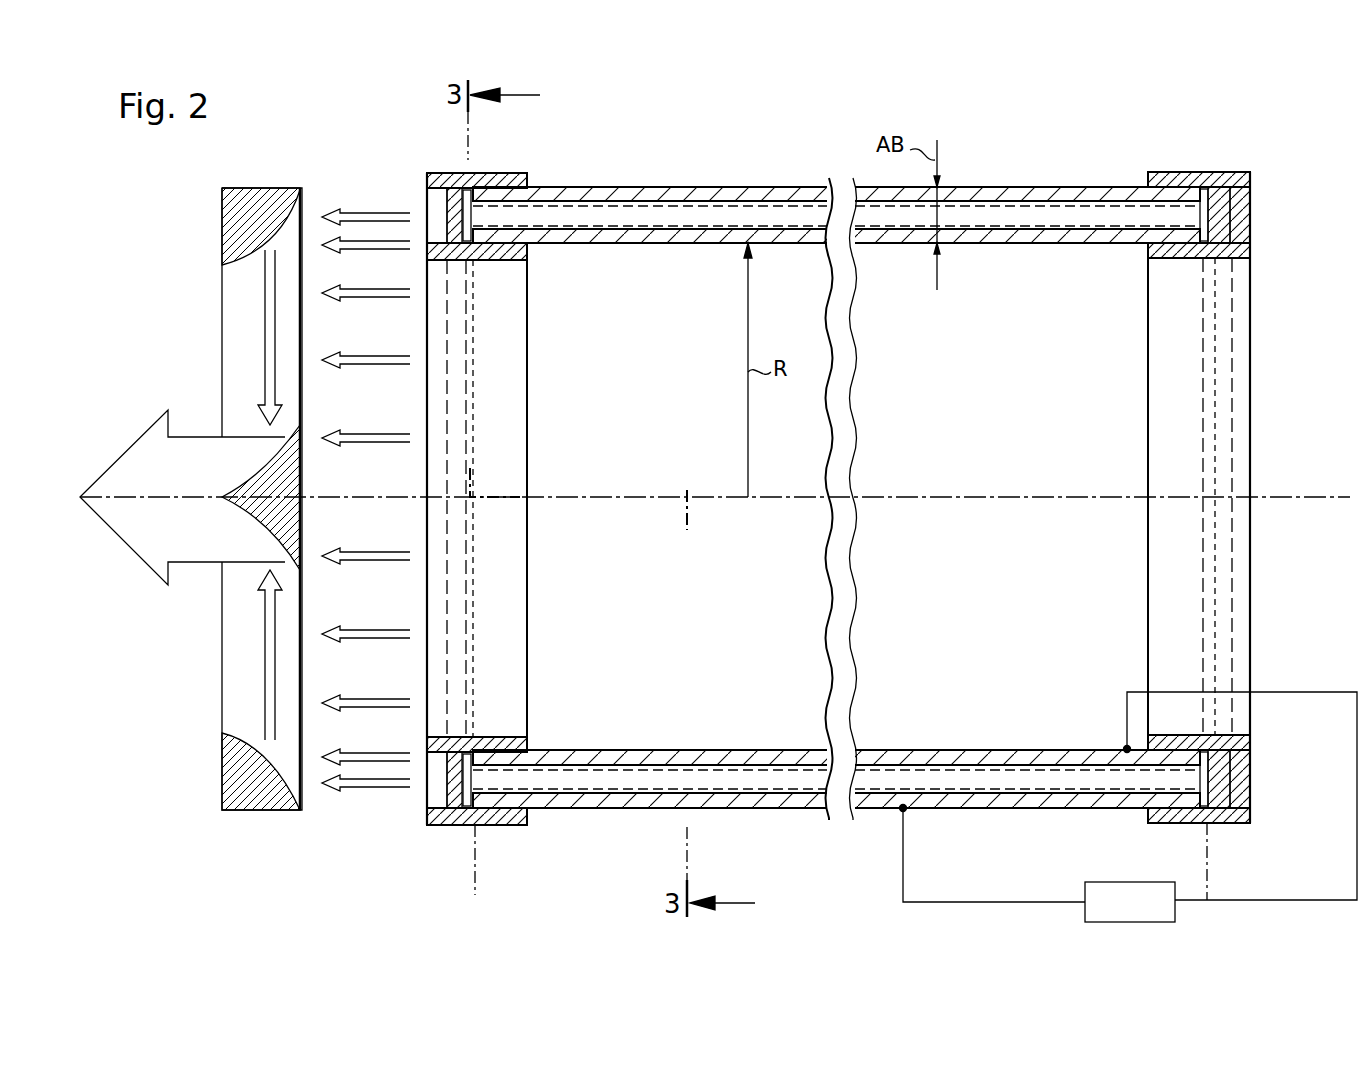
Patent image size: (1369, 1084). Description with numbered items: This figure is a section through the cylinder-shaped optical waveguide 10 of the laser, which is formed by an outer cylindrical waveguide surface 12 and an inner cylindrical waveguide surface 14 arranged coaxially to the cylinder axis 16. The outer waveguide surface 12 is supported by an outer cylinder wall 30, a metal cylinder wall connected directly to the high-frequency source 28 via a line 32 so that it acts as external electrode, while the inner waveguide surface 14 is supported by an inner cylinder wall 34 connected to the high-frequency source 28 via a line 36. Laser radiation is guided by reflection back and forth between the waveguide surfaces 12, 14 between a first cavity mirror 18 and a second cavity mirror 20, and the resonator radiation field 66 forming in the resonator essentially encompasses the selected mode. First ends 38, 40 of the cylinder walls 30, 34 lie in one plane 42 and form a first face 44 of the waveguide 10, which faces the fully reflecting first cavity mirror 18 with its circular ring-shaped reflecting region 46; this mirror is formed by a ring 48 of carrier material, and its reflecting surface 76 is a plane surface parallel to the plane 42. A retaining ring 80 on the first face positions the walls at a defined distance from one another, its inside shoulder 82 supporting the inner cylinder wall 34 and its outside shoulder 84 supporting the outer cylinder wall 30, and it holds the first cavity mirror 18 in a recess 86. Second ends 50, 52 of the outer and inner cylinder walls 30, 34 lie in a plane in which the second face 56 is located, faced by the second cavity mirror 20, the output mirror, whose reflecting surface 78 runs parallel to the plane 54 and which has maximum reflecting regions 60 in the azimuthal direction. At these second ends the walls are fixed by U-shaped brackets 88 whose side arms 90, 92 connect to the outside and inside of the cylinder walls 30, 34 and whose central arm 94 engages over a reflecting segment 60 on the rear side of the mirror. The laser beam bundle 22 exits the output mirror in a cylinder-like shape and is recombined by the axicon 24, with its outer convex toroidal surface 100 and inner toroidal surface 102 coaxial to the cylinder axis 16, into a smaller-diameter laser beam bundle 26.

The waveguide 10 is at (788, 187).
The outer cylindrical waveguide surface 12 is at (962, 210).
The inner cylindrical waveguide surface 14 is at (1012, 228).
The cylinder axis 16 is at (972, 497).
The first cavity mirror 18 is at (1215, 186).
The second cavity mirror 20 is at (438, 792).
The laser beam bundle 22 is at (350, 208).
The axicon 24 is at (222, 226).
The laser beam bundle 26 is at (196, 437).
The high-frequency source 28 is at (1100, 890).
The outer cylinder wall 30 is at (883, 808).
The line 32 is at (905, 868).
The inner cylinder wall 34 is at (780, 755).
The line 36 is at (1356, 892).
The first end 38 is at (1215, 800).
The first end 40 is at (1222, 760).
The plane 42 is at (1210, 883).
The first face 44 is at (1210, 240).
The circular ring-shaped reflecting region 46 is at (1210, 200).
The ring 48 is at (1252, 400).
The second end 50 is at (440, 823).
The second end 52 is at (437, 703).
The plane 54 is at (472, 873).
The second face 56 is at (460, 212).
The maximum reflecting region 60 is at (474, 212).
The resonator radiation field 66 is at (694, 210).
The reflecting surface 76 is at (1198, 780).
The reflecting surface 78 is at (520, 806).
The retaining ring 80 is at (1252, 205).
The inside shoulder 82 is at (1165, 252).
The outside shoulder 84 is at (1168, 186).
The recess 86 is at (1230, 776).
The U-shaped bracket 88 is at (499, 826).
The side arm 90 is at (520, 178).
The side arm 92 is at (520, 256).
The central arm 94 is at (432, 236).
The outer convex toroidal surface 100 is at (233, 738).
The inner toroidal surface 102 is at (255, 535).